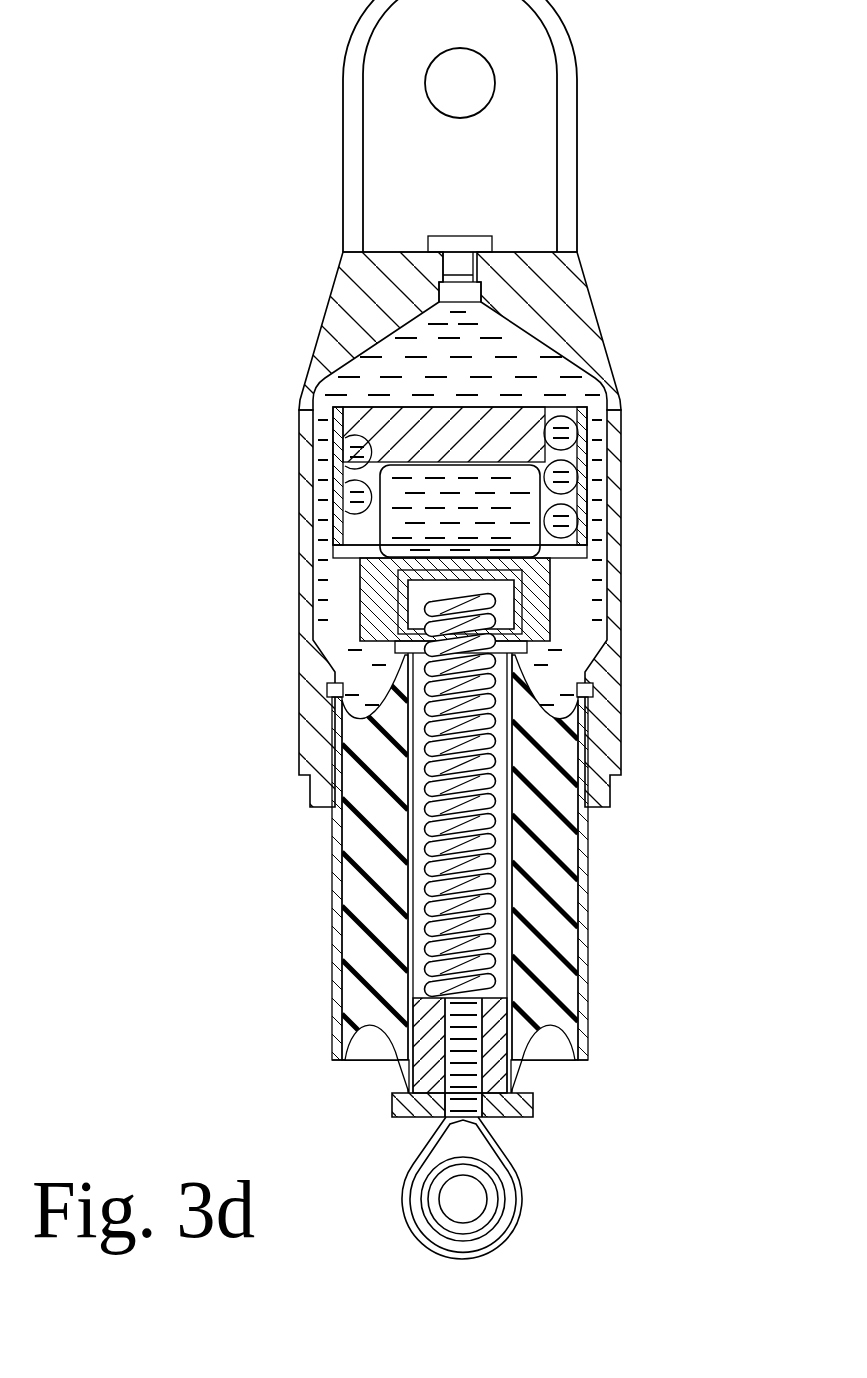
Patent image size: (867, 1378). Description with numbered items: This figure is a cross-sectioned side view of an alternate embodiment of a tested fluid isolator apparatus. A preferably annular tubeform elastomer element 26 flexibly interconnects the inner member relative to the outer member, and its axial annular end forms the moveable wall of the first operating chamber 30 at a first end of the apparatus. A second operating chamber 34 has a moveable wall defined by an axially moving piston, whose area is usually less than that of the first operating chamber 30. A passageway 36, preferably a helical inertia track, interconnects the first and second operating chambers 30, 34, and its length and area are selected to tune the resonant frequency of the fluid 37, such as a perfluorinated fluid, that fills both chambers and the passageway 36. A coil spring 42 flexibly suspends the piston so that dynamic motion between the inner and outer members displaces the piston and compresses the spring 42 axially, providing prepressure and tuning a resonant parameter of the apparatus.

The first operating chamber 30 is at (375, 352).
The fluid 37 is at (538, 370).
The passageway 36 is at (567, 428).
The second operating chamber 34 is at (497, 505).
The elastomer element 26 is at (562, 856).
The spring 42 is at (493, 933).